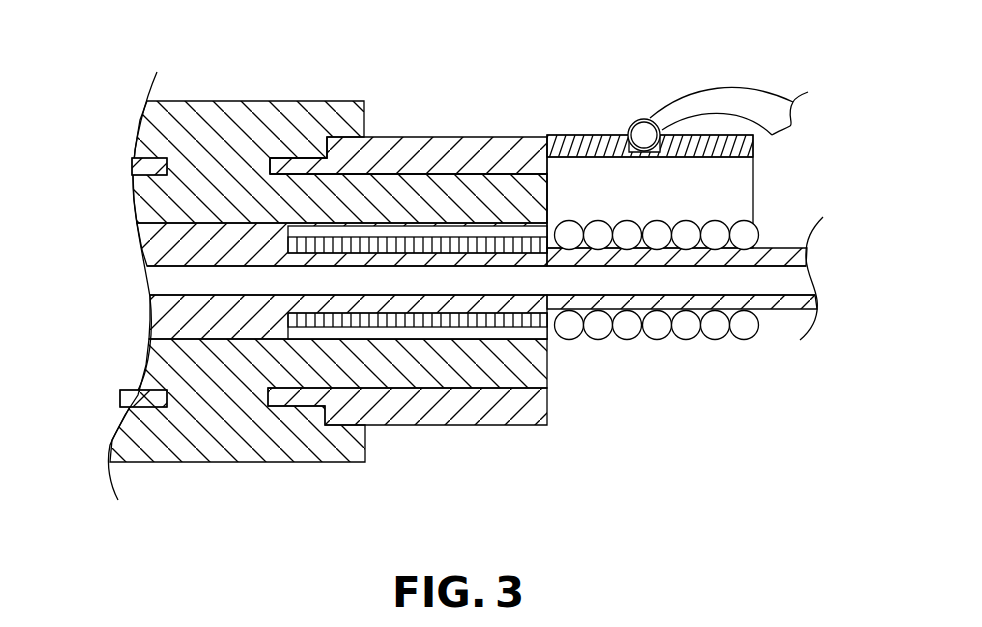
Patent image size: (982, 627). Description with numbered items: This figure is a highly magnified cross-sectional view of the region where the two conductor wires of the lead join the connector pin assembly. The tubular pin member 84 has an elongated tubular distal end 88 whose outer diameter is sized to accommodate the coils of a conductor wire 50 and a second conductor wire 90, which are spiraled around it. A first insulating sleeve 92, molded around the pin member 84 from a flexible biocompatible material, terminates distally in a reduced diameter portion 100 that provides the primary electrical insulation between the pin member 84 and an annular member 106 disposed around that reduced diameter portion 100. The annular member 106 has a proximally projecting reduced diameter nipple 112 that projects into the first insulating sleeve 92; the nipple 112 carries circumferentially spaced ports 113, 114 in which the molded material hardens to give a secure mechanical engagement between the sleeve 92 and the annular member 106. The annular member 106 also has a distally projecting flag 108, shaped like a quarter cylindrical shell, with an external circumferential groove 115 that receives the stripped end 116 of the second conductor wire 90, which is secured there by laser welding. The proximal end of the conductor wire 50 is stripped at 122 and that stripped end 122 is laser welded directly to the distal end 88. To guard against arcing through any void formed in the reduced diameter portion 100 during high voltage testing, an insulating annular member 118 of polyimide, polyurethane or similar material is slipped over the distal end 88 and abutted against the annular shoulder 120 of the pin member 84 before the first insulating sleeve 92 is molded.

The conductor wire 50 is at (686, 340).
The tubular pin member 84 is at (177, 322).
The distal end of the pin member 88 is at (773, 248).
The second conductor wire 90 is at (726, 82).
The first insulating sleeve 92 is at (227, 101).
The reduced diameter portion 100 is at (475, 187).
The annular member 106 is at (410, 136).
The flag 108 is at (572, 135).
The nipple 112 is at (300, 165).
The port 113 is at (223, 398).
The port 114 is at (210, 167).
The external circumferential groove 115 is at (623, 138).
The stripped end of the conductor wire 116 is at (638, 121).
The insulating annular member 118 is at (440, 318).
The annular shoulder 120 is at (288, 332).
The stripped end of the conductor wire 122 is at (578, 250).